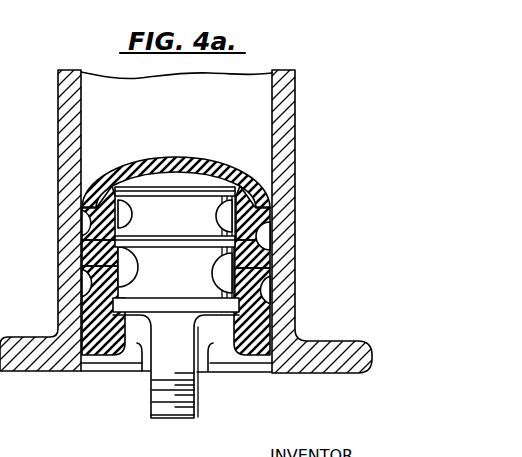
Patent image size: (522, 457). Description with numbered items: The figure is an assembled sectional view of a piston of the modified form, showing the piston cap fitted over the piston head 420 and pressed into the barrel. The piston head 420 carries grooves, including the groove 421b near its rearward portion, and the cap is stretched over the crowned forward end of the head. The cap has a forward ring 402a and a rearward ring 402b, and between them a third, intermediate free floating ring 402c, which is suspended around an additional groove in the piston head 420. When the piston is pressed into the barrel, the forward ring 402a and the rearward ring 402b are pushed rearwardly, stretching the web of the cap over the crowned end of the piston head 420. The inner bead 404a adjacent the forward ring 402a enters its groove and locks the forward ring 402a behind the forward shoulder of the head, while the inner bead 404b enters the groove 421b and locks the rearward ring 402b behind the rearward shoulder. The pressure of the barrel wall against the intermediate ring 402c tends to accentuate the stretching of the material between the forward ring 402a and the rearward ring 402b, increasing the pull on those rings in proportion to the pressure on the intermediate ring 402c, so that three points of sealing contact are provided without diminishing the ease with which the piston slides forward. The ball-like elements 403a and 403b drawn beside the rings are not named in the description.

The forward ring 402a is at (264, 206).
The inner bead 404a is at (268, 228).
The upper ball bearings 403a is at (271, 240).
The intermediate free floating ring 402c is at (266, 268).
The lower ball bearings 403b is at (268, 291).
The rearward ring 402b is at (270, 335).
The piston head 420 is at (195, 287).
The groove 421b is at (145, 360).
The inner bead 404b is at (208, 360).